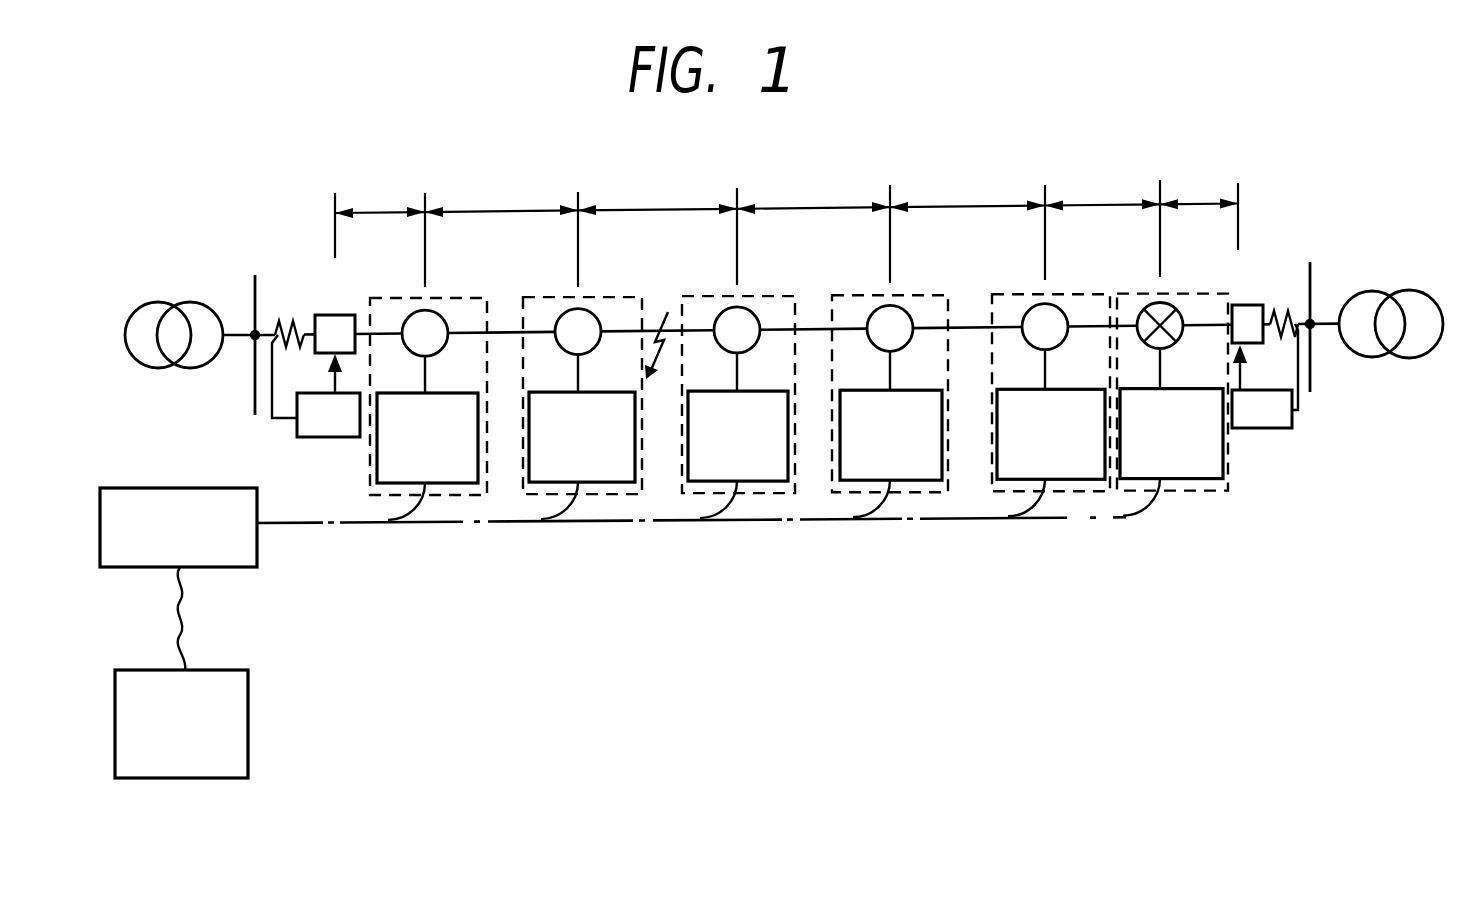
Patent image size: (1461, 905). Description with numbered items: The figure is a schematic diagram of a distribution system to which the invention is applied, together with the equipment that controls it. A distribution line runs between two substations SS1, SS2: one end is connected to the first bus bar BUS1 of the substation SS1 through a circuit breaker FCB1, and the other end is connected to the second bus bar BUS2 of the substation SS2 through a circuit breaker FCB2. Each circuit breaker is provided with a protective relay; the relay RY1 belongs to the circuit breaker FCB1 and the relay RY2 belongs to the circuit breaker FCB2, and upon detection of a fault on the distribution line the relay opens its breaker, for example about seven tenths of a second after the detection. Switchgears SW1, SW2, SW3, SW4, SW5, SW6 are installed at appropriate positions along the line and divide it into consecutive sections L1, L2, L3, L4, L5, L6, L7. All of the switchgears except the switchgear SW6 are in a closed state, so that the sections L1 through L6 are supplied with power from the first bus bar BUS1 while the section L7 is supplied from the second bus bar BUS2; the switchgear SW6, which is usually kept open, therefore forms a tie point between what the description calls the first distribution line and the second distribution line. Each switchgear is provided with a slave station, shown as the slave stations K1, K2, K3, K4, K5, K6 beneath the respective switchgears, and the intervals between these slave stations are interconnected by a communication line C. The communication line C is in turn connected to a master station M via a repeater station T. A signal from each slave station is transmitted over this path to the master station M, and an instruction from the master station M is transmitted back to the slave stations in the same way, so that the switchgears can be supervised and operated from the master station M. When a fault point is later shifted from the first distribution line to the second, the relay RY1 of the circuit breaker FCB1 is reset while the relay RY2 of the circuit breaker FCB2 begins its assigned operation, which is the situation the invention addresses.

The substation SS1 is at (163, 315).
The substation SS2 is at (1398, 305).
The first bus bar BUS1 is at (253, 298).
The second bus bar BUS2 is at (1312, 362).
The circuit breaker FCB1 is at (315, 314).
The circuit breaker FCB2 is at (1265, 305).
The protective relay RY1 is at (316, 386).
The protective relay RY2 is at (1265, 376).
The switchgear SW1 is at (434, 312).
The switchgear SW2 is at (587, 310).
The switchgear SW3 is at (746, 309).
The switchgear SW4 is at (899, 307).
The switchgear SW5 is at (1054, 305).
The switchgear SW6 is at (1169, 304).
The section of distribution line L1 is at (380, 216).
The section of distribution line L2 is at (501, 229).
The section of distribution line L3 is at (657, 228).
The section of distribution line L4 is at (813, 227).
The section of distribution line L5 is at (967, 225).
The section of distribution line L6 is at (1102, 222).
The section of distribution line L7 is at (1199, 220).
The slave station K1 is at (457, 483).
The slave station K2 is at (610, 482).
The slave station K3 is at (770, 481).
The slave station K4 is at (923, 480).
The slave station K5 is at (1075, 479).
The slave station K6 is at (1193, 478).
The communication line C is at (677, 521).
The repeater station T is at (131, 488).
The master station M is at (133, 778).